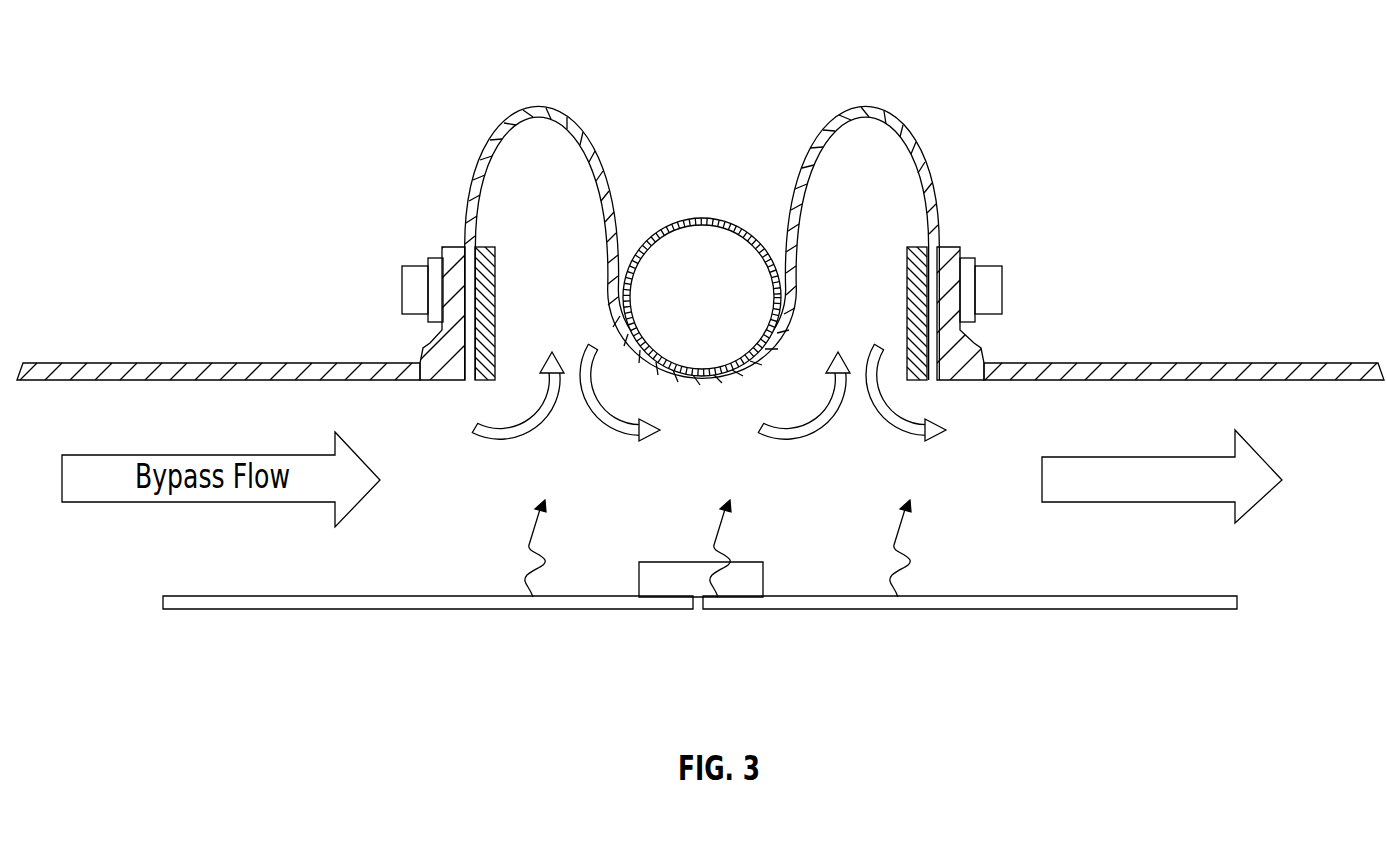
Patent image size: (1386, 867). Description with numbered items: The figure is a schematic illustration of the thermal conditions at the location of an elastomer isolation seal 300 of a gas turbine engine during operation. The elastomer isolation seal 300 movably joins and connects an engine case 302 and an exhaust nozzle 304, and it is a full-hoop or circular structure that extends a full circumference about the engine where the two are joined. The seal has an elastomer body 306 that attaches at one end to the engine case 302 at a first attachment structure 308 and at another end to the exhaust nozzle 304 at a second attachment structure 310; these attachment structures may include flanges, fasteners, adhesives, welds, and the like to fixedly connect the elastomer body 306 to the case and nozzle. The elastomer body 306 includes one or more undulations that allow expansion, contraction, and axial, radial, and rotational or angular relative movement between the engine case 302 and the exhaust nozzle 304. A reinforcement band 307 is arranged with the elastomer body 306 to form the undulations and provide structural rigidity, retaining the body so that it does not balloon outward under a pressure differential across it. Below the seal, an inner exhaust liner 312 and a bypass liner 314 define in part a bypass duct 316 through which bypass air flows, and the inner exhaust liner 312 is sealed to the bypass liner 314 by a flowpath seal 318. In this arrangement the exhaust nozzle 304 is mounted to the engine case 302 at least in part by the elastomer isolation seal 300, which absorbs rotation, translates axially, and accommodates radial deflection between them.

The elastomer isolation seal 300 is at (926, 88).
The engine case 302 is at (310, 365).
The exhaust nozzle 304 is at (1223, 364).
The elastomer body 306 is at (542, 112).
The reinforcement band 307 is at (704, 212).
The first attachment structure 308 is at (455, 236).
The second attachment structure 310 is at (954, 235).
The inner exhaust liner 312 is at (822, 608).
The bypass liner 314 is at (498, 610).
The bypass duct 316 is at (477, 497).
The flowpath seal 318 is at (678, 588).